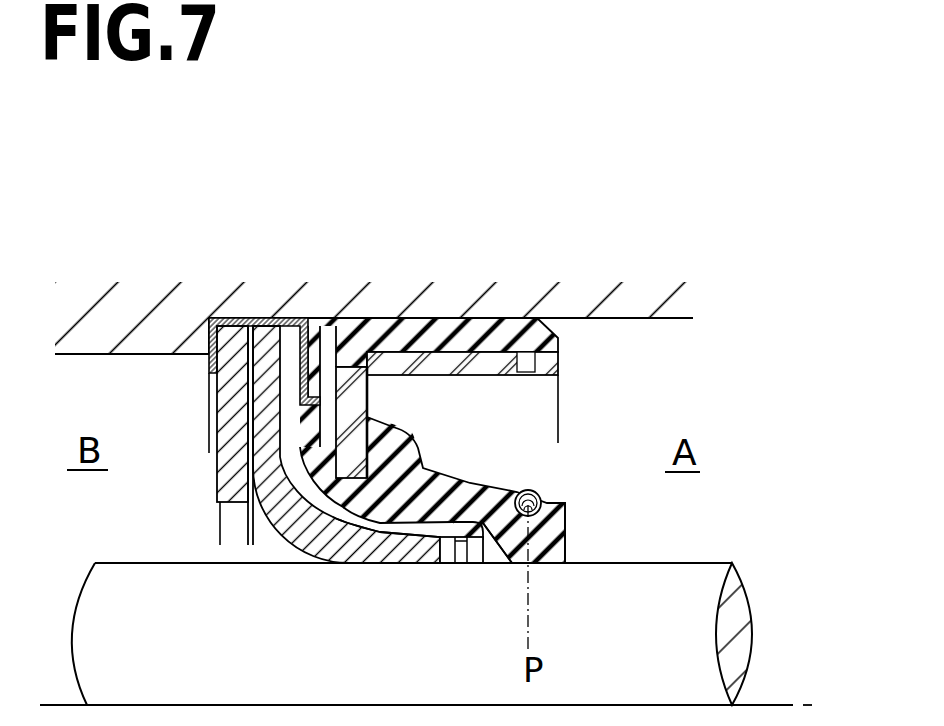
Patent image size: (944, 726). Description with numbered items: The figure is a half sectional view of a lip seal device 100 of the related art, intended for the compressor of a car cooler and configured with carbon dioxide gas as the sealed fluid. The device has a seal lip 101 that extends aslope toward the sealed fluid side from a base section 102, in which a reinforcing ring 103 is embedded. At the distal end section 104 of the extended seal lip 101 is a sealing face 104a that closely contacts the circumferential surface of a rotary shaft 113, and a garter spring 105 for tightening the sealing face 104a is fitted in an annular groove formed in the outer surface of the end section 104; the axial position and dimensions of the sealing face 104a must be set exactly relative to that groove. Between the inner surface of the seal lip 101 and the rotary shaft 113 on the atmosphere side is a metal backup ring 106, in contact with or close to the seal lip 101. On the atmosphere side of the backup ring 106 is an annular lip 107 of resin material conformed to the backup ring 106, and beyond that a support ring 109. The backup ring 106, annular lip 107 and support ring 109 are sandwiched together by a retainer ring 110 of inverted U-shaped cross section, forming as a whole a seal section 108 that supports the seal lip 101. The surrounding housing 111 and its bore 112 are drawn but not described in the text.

The lip seal device 100 is at (627, 242).
The seal lip 101 is at (528, 422).
The base section 102 is at (440, 335).
The reinforcing ring 103 is at (385, 355).
The distal end section 104 is at (548, 520).
The sealing face 104a is at (520, 552).
The garter spring 105 is at (537, 490).
The metal backup ring 106 is at (483, 562).
The annular lip 107 is at (297, 530).
The seal section 108 is at (445, 535).
The support ring 109 is at (235, 470).
The retainer ring 110 is at (253, 320).
The housing 111 is at (128, 312).
The housing bore 112 is at (620, 320).
The rotary shaft 113 is at (727, 627).